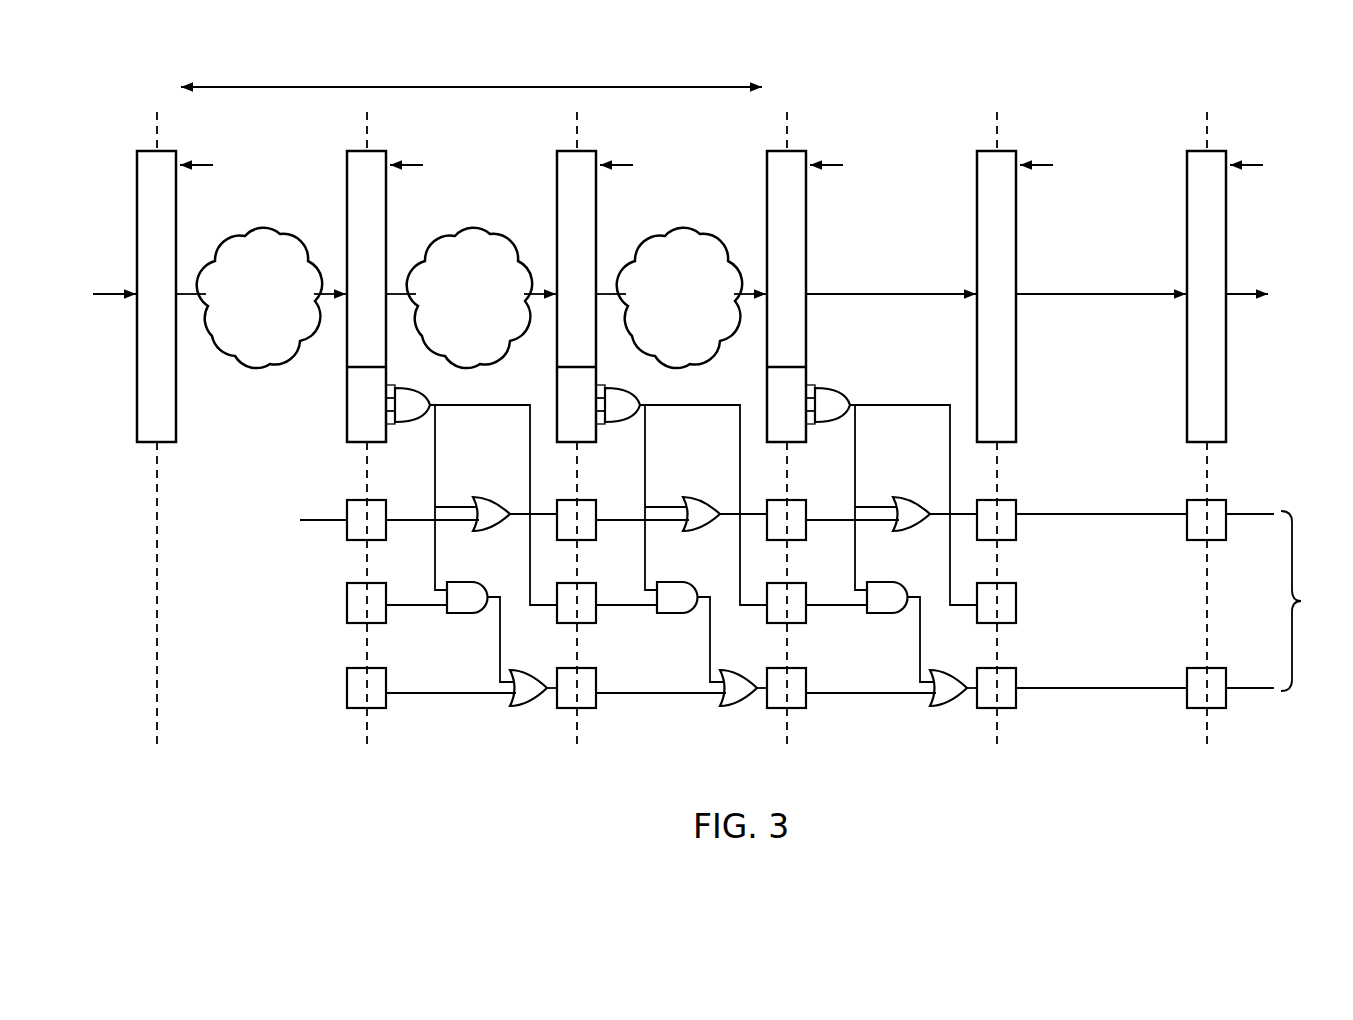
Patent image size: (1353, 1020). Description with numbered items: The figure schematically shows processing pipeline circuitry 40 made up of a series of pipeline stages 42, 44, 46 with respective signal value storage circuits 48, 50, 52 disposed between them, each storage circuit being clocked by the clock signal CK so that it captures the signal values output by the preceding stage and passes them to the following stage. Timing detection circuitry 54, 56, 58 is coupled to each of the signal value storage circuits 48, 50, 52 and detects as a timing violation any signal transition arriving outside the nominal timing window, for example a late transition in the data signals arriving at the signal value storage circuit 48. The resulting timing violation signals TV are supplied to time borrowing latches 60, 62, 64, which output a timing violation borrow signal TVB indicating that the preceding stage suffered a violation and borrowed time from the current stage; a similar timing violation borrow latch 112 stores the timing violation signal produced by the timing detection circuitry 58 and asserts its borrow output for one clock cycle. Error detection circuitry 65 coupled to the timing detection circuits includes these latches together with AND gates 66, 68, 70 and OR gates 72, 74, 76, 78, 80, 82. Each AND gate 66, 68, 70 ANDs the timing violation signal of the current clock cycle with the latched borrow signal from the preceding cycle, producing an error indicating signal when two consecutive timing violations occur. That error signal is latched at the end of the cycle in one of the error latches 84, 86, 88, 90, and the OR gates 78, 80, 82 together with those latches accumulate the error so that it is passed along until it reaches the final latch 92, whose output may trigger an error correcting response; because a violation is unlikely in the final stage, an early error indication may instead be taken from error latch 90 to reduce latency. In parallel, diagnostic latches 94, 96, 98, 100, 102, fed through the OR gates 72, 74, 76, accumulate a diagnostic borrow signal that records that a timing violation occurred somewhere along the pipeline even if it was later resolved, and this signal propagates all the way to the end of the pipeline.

The processing pipeline circuitry 40 is at (714, 433).
The pipeline stage 42 is at (226, 356).
The pipeline stage 44 is at (436, 356).
The pipeline stage 46 is at (646, 356).
The signal value storage circuit 48 is at (389, 216).
The signal value storage circuit 50 is at (599, 216).
The signal value storage circuit 52 is at (809, 216).
The timing detection circuitry 54 is at (347, 424).
The timing detection circuitry 56 is at (557, 424).
The timing detection circuitry 58 is at (767, 424).
The time borrowing latch 60 is at (383, 583).
The time borrowing latch 62 is at (593, 583).
The time borrowing latch 64 is at (803, 583).
The error detection circuitry 65 is at (1281, 601).
The AND gate 66 is at (470, 613).
The AND gate 68 is at (680, 613).
The AND gate 70 is at (890, 613).
The OR gate 72 is at (478, 497).
The OR gate 74 is at (688, 497).
The OR gate 76 is at (898, 497).
The OR gate 78 is at (525, 706).
The OR gate 80 is at (735, 706).
The OR gate 82 is at (945, 706).
The error latch 84 is at (383, 708).
The error latch 86 is at (593, 708).
The error latch 88 is at (803, 708).
The error latch 90 is at (1013, 708).
The final latch 92 is at (1223, 708).
The diagnostic latch 94 is at (383, 500).
The diagnostic latch 96 is at (593, 500).
The diagnostic latch 98 is at (803, 500).
The diagnostic latch 100 is at (1013, 500).
The diagnostic latch 102 is at (1223, 500).
The timing violation borrow latch 112 is at (1013, 583).